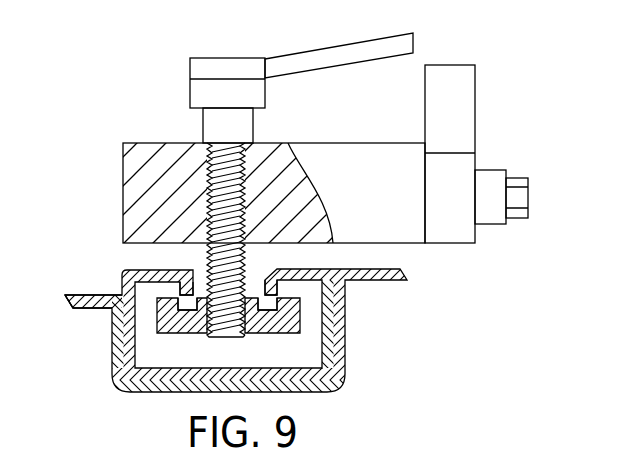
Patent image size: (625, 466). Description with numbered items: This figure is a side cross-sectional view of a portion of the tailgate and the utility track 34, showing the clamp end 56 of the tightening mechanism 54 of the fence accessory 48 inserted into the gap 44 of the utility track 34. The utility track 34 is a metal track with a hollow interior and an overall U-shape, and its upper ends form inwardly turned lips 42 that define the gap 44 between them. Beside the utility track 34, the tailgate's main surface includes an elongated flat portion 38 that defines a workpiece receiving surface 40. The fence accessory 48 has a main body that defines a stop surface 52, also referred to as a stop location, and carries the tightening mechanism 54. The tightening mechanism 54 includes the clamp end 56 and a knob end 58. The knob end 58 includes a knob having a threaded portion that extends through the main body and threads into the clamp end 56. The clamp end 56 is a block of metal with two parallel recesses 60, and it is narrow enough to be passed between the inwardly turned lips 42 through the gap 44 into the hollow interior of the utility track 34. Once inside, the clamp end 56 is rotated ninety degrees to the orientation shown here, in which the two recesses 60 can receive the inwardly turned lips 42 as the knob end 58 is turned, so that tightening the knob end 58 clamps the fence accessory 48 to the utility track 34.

The utility track 34 is at (298, 268).
The elongated flat portion 38 is at (74, 306).
The workpiece receiving surface 40 is at (92, 294).
The inwardly turned lips 42 is at (186, 292).
The gap 44 is at (262, 292).
The fence accessory 48 is at (152, 139).
The stop surface 52 is at (478, 101).
The tightening mechanism 54 is at (213, 53).
The clamp end 56 is at (295, 320).
The knob end 58 is at (362, 50).
The recesses 60 is at (273, 343).